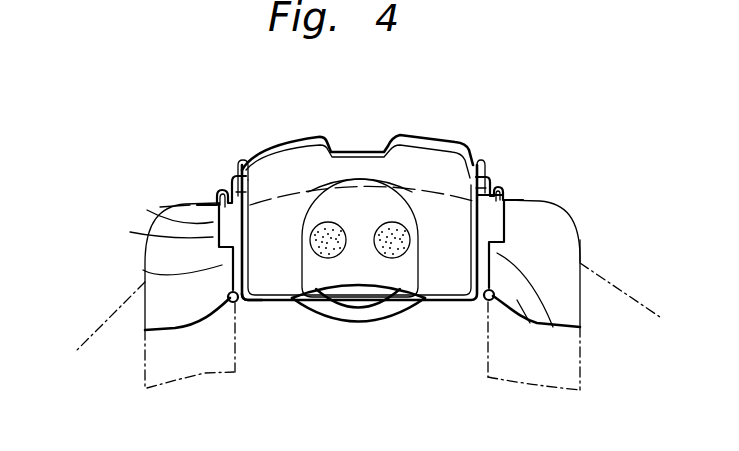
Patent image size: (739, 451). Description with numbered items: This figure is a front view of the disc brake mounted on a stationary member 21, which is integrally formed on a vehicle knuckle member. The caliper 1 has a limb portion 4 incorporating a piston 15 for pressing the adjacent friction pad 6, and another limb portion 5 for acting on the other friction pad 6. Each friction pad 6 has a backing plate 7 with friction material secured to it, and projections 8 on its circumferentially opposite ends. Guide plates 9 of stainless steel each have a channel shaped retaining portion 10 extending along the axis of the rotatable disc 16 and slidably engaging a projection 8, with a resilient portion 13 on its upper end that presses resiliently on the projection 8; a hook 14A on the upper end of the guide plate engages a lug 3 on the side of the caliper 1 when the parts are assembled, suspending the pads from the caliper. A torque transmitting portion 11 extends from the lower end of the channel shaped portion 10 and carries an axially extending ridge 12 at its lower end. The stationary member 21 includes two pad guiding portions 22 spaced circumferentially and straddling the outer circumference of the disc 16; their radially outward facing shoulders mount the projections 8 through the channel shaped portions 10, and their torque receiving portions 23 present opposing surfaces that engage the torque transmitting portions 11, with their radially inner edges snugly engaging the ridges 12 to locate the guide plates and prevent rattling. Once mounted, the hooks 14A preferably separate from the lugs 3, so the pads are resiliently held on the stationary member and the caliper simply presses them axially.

The caliper 1 is at (417, 135).
The lug 3 is at (246, 180).
The limb portion 4 is at (380, 318).
The limb portion 5 is at (283, 282).
The friction pad 6 is at (358, 267).
The backing plate 7 is at (246, 306).
The projection 8 is at (147, 205).
The guide plate 9 is at (217, 249).
The channel shaped retaining portion 10 is at (130, 232).
The torque transmitting portion 11 is at (517, 300).
The axially extending ridge 12 is at (230, 304).
The resilient portion 13 is at (223, 200).
The hook 14A is at (228, 188).
The piston 15 is at (398, 297).
The rotatable disc 16 is at (107, 313).
The stationary member 21 is at (188, 205).
The pad guiding portion 22 is at (212, 204).
The torque receiving portion 23 is at (143, 270).